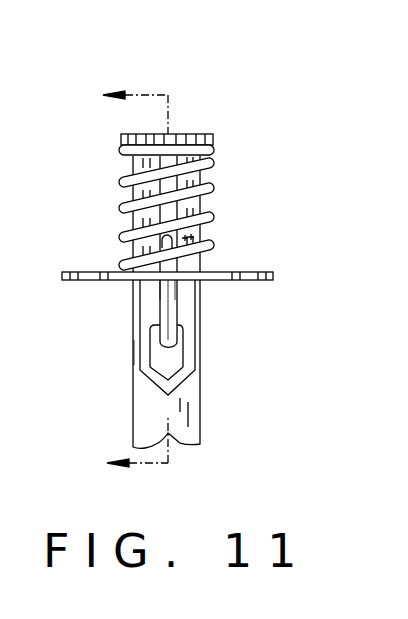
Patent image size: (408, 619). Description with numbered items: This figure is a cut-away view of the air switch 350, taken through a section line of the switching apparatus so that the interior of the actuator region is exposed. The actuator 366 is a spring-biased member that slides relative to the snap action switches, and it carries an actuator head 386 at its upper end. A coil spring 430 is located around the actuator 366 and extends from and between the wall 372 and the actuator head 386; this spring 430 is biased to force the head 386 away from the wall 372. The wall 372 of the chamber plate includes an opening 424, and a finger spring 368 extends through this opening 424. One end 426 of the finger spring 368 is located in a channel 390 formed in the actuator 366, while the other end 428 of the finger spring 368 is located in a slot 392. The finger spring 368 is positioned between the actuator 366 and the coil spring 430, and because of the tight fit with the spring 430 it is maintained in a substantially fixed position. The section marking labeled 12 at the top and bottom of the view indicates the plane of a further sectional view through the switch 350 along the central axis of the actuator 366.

The section line 12- 12 is at (114, 280).
The air switch 350 is at (192, 91).
The actuator 366 is at (201, 360).
The finger spring 368 is at (197, 294).
The wall 372 is at (244, 271).
The actuator head 386 is at (195, 134).
The channel 390 is at (133, 352).
The slot 392 is at (205, 168).
The opening 424 is at (160, 284).
The end of finger spring 426 is at (183, 338).
The end of finger spring 428 is at (186, 239).
The spring 430 is at (118, 211).